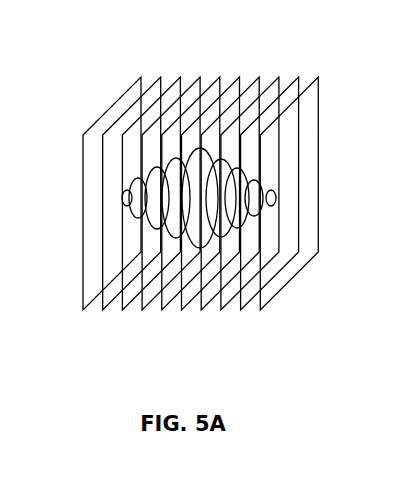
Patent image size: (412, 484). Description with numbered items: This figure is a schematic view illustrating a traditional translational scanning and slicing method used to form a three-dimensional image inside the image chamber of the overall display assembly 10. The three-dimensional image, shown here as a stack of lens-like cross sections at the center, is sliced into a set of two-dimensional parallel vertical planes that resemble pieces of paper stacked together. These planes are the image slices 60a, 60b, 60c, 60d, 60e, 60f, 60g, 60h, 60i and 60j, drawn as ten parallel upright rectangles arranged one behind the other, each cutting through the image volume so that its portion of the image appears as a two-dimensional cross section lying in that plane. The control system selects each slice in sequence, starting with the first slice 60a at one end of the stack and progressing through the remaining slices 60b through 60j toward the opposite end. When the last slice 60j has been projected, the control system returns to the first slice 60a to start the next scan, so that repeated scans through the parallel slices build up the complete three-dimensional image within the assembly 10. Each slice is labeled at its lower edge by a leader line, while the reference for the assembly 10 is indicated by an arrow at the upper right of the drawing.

The optical system / lens assembly 10 is at (360, 70).
The image slice 60a is at (260, 310).
The image slice 60b is at (241, 310).
The image slice 60c is at (221, 310).
The image slice 60d is at (201, 310).
The image slice 60e is at (182, 310).
The image slice 60f is at (162, 310).
The image slice 60g is at (142, 310).
The image slice 60h is at (122, 310).
The image slice 60i is at (103, 310).
The image slice 60j is at (83, 310).